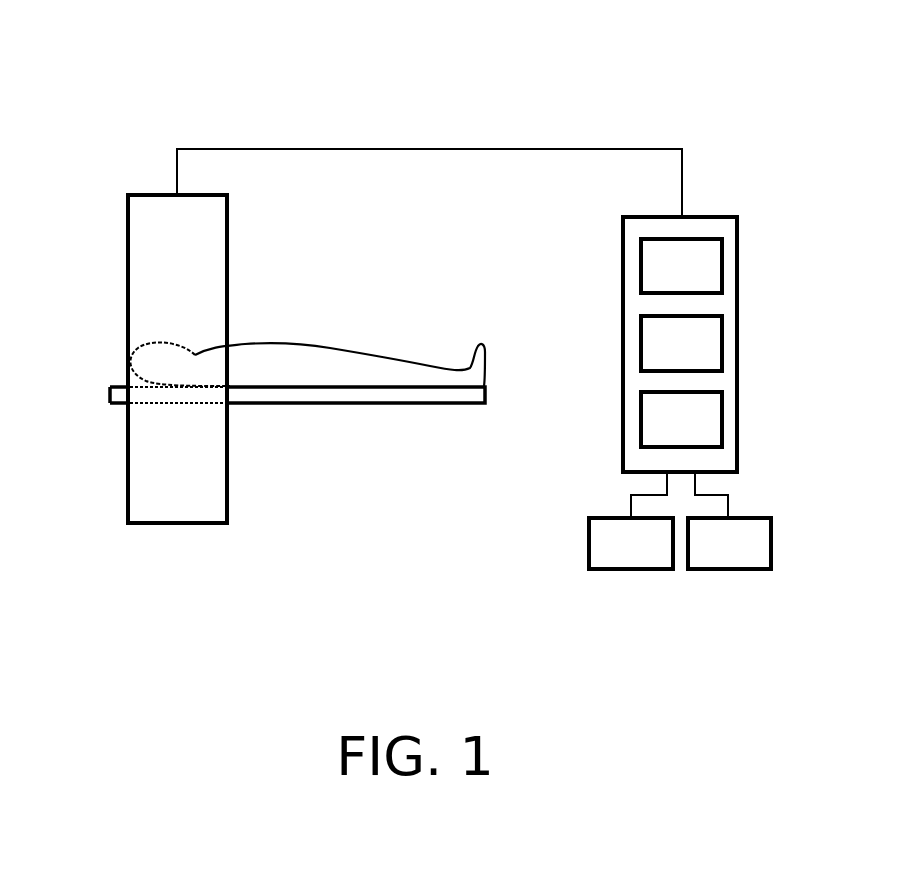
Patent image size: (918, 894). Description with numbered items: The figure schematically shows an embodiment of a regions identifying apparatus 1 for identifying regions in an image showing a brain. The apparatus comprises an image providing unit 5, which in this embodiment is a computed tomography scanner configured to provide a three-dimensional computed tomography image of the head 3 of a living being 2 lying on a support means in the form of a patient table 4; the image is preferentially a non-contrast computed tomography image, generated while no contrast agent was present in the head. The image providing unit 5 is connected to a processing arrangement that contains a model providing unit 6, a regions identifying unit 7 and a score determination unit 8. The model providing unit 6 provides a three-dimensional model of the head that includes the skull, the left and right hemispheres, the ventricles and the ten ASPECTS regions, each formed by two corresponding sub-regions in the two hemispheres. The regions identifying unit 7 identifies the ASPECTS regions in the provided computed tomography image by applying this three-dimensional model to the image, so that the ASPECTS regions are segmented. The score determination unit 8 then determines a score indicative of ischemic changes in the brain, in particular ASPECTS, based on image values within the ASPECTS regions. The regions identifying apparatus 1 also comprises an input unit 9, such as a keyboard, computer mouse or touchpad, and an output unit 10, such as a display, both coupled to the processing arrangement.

The regions identifying apparatus 1 is at (369, 90).
The living being 2 is at (363, 351).
The head 3 is at (130, 343).
The patient table 4 is at (383, 405).
The image providing unit 5 is at (182, 525).
The model providing unit 6 is at (724, 268).
The regions identifying unit 7 is at (724, 350).
The score determination unit 8 is at (724, 421).
The input unit 9 is at (630, 571).
The output unit 10 is at (726, 571).